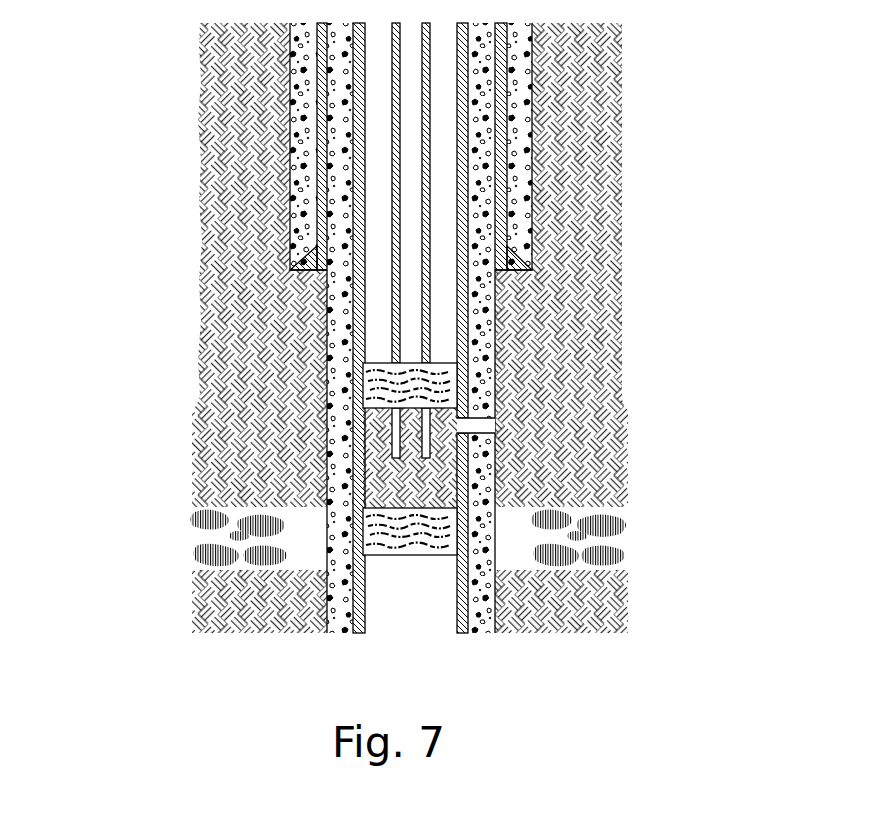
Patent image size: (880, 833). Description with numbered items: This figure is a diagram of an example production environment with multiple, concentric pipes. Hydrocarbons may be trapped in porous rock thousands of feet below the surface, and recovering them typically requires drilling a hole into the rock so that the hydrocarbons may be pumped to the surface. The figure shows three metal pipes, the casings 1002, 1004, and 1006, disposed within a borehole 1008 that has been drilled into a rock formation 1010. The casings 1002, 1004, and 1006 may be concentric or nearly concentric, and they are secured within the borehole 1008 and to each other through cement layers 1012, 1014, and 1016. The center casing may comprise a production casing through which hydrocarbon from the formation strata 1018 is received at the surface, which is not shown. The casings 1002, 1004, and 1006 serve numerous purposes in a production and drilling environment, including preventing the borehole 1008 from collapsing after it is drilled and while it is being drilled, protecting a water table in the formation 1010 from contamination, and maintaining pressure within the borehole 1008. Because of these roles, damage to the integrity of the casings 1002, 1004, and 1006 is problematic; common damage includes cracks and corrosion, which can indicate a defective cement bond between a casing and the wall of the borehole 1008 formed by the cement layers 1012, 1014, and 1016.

The casing 1002 is at (392, 357).
The casing 1004 is at (358, 233).
The casing 1006 is at (323, 78).
The borehole 1008 is at (527, 222).
The rock formation 1010 is at (588, 92).
The cement layer 1012 is at (373, 302).
The cement layer 1014 is at (340, 148).
The cement layer 1016 is at (298, 40).
The formation strata 1018 is at (587, 467).